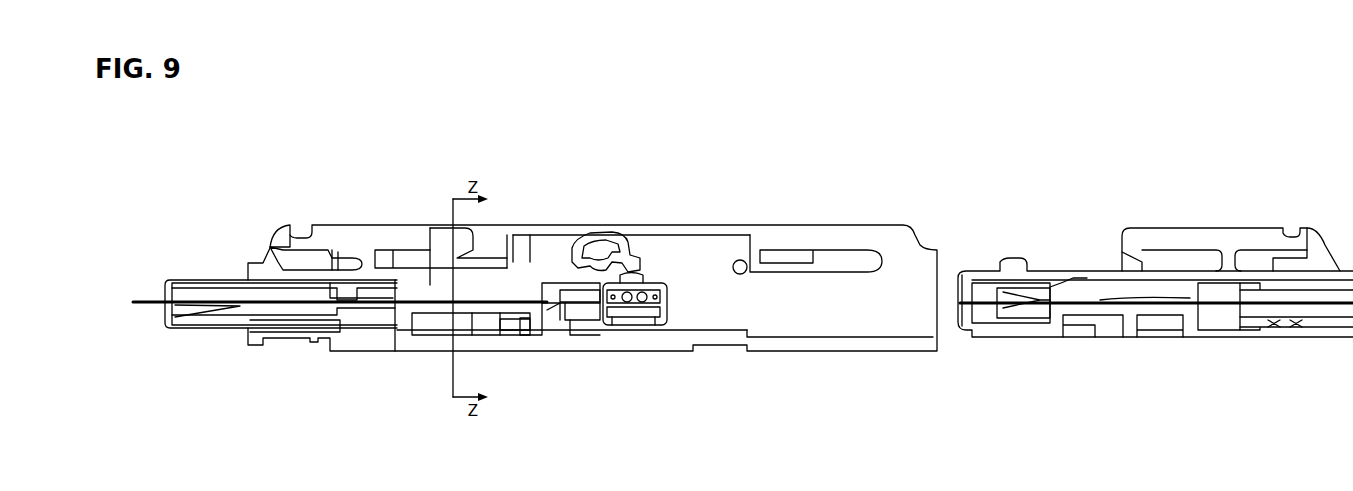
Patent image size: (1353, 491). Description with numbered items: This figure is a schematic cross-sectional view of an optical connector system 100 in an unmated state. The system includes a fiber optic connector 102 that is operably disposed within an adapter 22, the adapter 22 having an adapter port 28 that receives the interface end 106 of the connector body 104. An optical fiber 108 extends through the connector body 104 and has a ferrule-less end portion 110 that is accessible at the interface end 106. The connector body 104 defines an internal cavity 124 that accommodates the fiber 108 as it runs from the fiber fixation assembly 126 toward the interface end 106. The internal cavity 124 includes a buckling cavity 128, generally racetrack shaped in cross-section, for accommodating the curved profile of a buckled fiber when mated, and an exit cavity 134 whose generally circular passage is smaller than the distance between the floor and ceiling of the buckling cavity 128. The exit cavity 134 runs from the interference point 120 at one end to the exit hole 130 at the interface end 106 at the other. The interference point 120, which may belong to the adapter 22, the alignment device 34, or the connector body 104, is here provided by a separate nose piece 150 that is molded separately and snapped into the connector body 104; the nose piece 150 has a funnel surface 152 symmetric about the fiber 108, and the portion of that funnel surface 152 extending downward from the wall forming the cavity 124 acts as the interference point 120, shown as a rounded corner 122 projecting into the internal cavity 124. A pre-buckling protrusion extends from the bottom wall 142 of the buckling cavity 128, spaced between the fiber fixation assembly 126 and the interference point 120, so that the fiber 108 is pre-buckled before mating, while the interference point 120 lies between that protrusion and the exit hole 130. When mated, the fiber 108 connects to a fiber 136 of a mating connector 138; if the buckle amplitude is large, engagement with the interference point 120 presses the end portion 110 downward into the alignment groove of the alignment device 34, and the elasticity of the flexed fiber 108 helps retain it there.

The optical connector system 100 is at (807, 152).
The adapter 22 is at (478, 225).
The adapter port 28 is at (832, 331).
The alignment device 34 is at (650, 283).
The fiber optic connector 102 is at (493, 240).
The connector body 104 is at (397, 268).
The interface end 106 is at (606, 312).
The optical fiber 108 is at (399, 300).
The end portion 110 is at (647, 315).
The interference point 120 is at (588, 246).
The rounded corner 122 is at (562, 305).
The internal cavity 124 is at (530, 283).
The fiber fixation assembly 126 is at (372, 318).
The buckling cavity 128 is at (430, 228).
The exit hole 130 is at (628, 283).
The exit cavity 134 is at (587, 318).
The fiber 136 is at (1102, 300).
The mating connector 138 is at (1166, 275).
The bottom wall 142 is at (484, 314).
The nose piece 150 is at (573, 318).
The funnel surface 152 is at (568, 250).